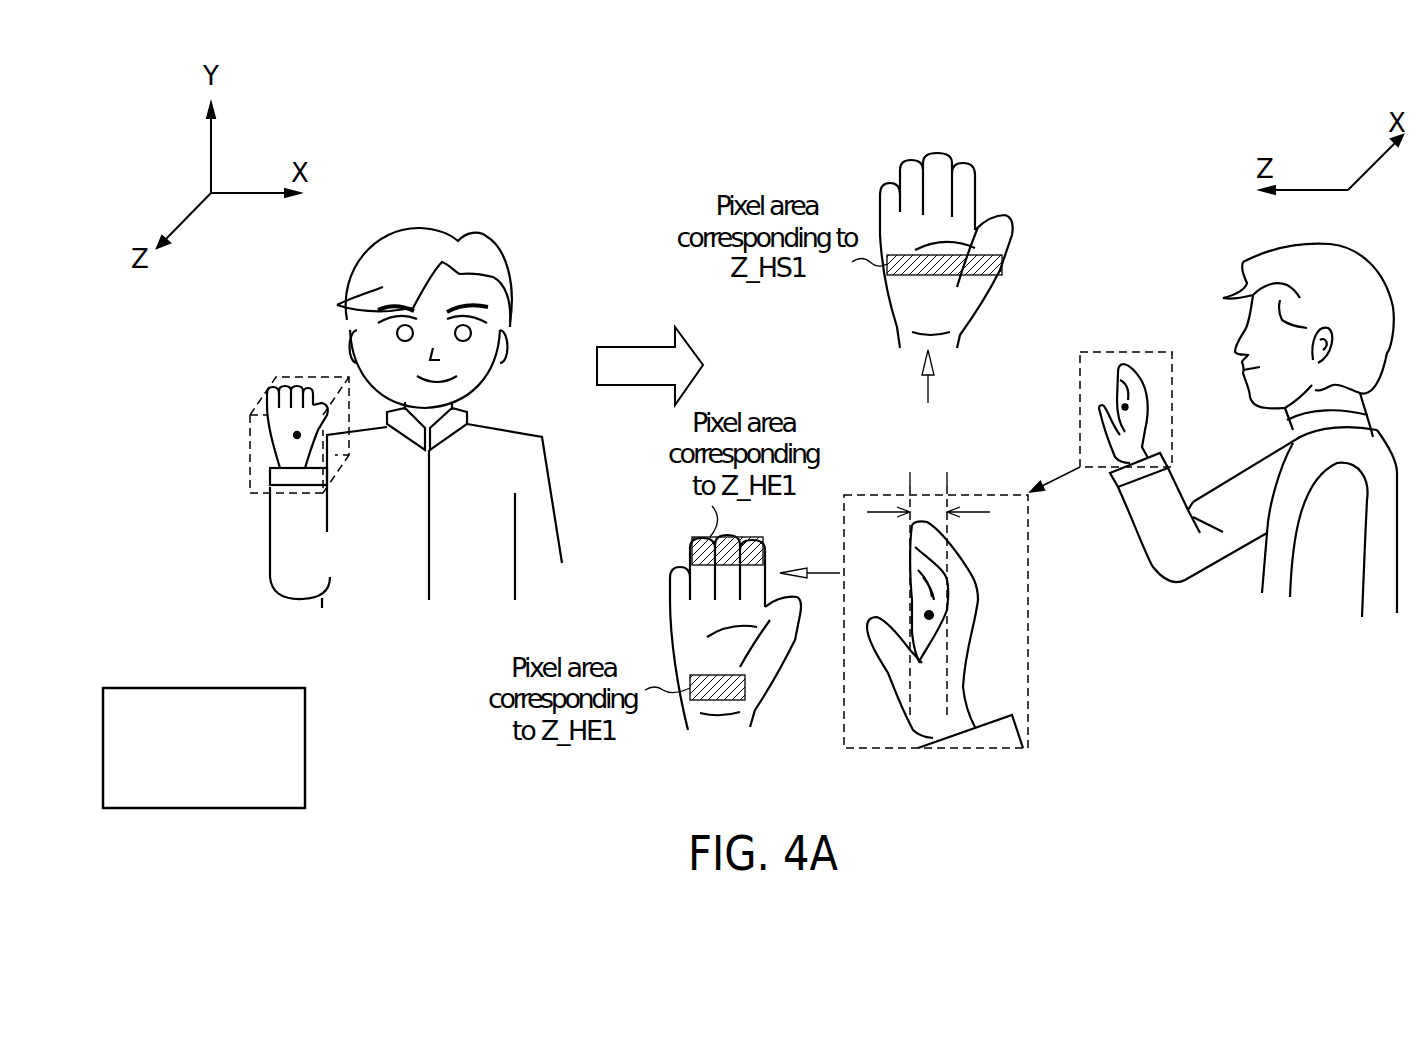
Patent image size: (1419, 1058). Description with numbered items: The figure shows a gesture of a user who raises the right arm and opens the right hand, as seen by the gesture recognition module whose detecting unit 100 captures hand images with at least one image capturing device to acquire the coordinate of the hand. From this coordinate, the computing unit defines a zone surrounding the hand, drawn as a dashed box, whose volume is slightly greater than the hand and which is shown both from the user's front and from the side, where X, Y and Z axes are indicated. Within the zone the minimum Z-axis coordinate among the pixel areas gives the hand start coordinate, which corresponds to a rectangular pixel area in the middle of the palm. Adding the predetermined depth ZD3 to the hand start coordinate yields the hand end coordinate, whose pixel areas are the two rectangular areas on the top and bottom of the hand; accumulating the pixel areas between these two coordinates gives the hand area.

The detecting unit 100 is at (305, 745).
The depth ZD3 is at (929, 514).